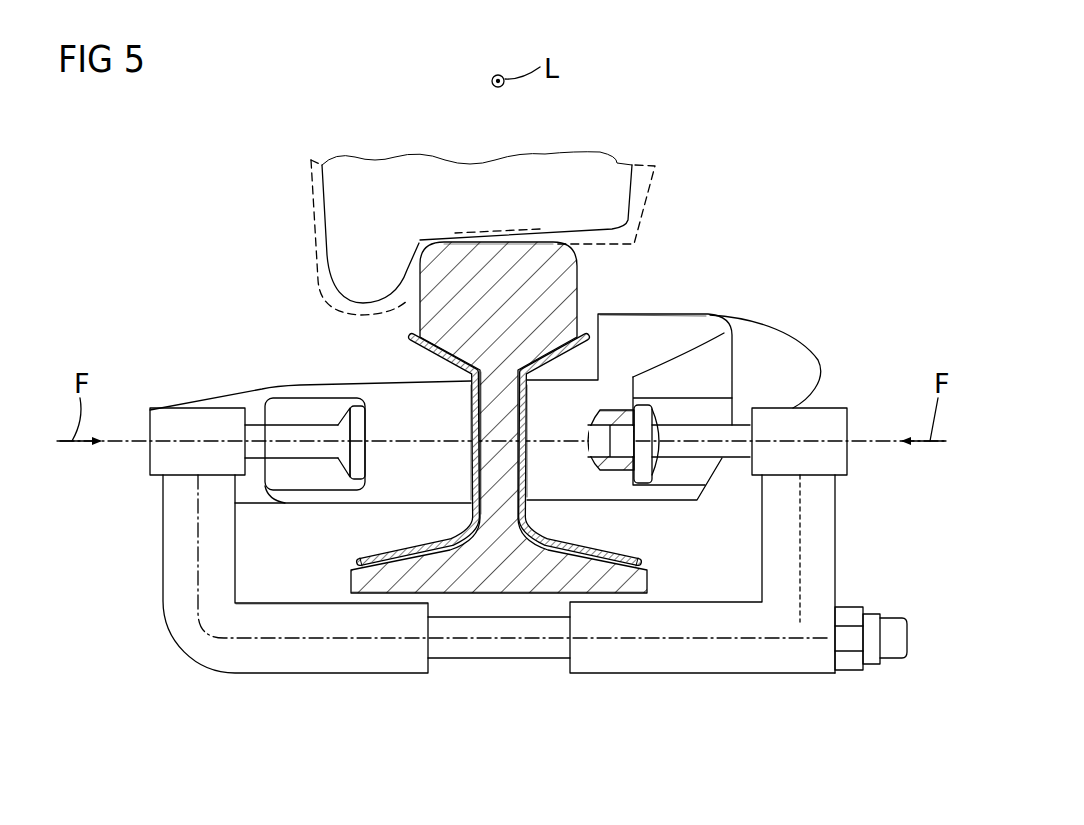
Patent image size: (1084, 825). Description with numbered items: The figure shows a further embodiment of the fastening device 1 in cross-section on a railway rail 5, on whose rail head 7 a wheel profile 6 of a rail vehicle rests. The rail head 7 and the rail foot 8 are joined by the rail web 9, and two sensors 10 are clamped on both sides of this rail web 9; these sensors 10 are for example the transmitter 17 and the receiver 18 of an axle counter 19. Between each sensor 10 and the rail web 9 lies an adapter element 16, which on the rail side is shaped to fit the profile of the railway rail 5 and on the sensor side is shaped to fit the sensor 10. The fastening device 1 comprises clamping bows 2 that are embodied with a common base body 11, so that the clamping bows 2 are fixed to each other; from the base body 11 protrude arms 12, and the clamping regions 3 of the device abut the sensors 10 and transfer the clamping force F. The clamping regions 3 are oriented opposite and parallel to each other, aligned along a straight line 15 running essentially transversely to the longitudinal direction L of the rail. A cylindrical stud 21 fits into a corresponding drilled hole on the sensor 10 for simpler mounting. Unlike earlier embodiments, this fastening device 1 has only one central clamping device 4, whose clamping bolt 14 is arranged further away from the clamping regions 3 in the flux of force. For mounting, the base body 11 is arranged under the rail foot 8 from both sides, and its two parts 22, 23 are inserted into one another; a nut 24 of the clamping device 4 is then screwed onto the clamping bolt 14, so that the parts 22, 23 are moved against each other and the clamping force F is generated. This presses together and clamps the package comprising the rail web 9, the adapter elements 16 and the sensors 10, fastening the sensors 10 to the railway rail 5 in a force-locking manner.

The fastening device 1 is at (152, 680).
The clamping bow 2 is at (282, 656).
The clamping region 3 is at (228, 372).
The clamping device 4 is at (130, 485).
The railway rail 5 is at (499, 407).
The wheel profile 6 is at (445, 168).
The rail head 7 is at (508, 268).
The rail foot 8 is at (593, 586).
The rail web 9 is at (520, 478).
The sensor 10 is at (382, 488).
The base body 11 is at (663, 656).
The arm 12 is at (175, 550).
The clamping bolt 14 is at (888, 650).
The straight line 15 is at (427, 443).
The adapter element 16 is at (473, 427).
The transmitter 17 is at (560, 348).
The receiver 18 is at (412, 392).
The axle counter 19 is at (754, 220).
The cylindrical stud 21 is at (628, 440).
The first part of the base body 22 is at (352, 656).
The second part of the base body 23 is at (748, 656).
The nut 24 is at (850, 660).